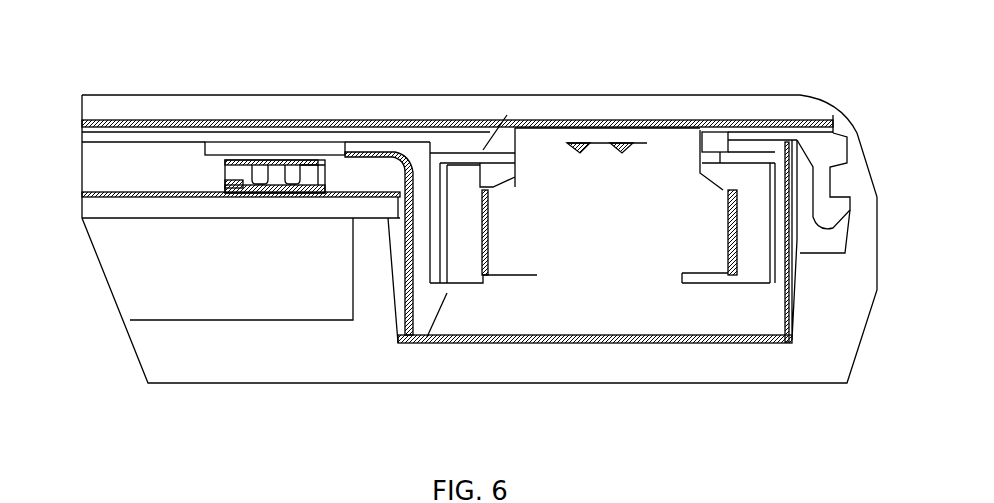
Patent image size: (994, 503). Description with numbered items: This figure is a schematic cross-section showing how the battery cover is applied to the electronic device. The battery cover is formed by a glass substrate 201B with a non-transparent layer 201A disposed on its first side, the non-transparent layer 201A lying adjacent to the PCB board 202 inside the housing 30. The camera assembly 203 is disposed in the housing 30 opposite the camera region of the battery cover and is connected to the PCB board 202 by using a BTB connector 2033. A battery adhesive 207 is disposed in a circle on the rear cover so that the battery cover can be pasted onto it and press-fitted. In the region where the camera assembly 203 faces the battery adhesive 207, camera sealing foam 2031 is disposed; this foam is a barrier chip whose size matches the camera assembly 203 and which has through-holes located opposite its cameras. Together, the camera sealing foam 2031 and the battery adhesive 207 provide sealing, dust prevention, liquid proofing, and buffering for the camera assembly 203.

The housing 30 is at (827, 297).
The glass substrate 201B is at (262, 110).
The non-transparent layer 201A is at (317, 125).
The PCB board 202 is at (118, 210).
The BTB connector 2033 is at (243, 177).
The battery adhesive 207 is at (453, 138).
The camera sealing foam 2031 is at (487, 147).
The camera assembly 203 is at (672, 190).